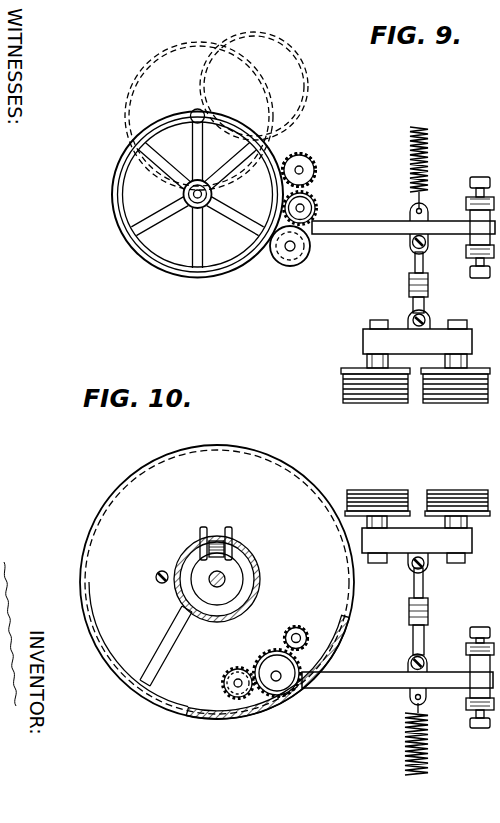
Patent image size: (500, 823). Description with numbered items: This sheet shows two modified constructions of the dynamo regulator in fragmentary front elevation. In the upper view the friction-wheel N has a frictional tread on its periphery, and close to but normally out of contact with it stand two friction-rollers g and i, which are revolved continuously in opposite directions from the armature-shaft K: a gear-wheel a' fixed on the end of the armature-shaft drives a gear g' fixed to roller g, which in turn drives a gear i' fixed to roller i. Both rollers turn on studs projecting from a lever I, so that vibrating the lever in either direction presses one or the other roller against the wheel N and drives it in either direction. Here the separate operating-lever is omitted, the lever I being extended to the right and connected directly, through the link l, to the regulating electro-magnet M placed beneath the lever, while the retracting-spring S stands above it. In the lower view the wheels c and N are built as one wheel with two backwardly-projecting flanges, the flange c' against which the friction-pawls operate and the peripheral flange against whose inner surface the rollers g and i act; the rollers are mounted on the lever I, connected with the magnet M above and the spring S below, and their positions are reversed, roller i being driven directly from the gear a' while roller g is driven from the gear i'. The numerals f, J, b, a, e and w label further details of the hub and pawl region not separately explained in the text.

In FIG. 9, the friction-wheel N is at (157, 279).
In FIG. 10, the friction-wheel N is at (52, 546).
In FIG. 9, the pendulum arm circle f is at (152, 79).
In FIG. 9, the wheel c is at (259, 86).
In FIG. 9, the armature-shaft K is at (352, 169).
In FIG. 10, the armature-shaft K is at (290, 633).
In FIG. 9, the gear-wheel a' is at (314, 172).
In FIG. 10, the gear-wheel a' is at (309, 637).
In FIG. 9, the friction-roller g is at (314, 208).
In FIG. 10, the friction-roller g is at (226, 683).
In FIG. 9, the gear g' is at (318, 204).
In FIG. 10, the gear g' is at (231, 671).
In FIG. 9, the friction-roller i is at (290, 254).
In FIG. 10, the friction-roller i is at (277, 673).
In FIG. 9, the gear i' is at (303, 247).
In FIG. 10, the gear i' is at (275, 664).
In FIG. 9, the lever I is at (380, 226).
In FIG. 10, the lever I is at (397, 679).
In FIG. 9, the retracting-spring S is at (409, 168).
In FIG. 10, the retracting-spring S is at (409, 739).
In FIG. 9, the link l is at (423, 290).
In FIG. 10, the link l is at (423, 611).
In FIG. 9, the regulating electro-magnet M is at (406, 361).
In FIG. 10, the regulating electro-magnet M is at (421, 531).
In FIG. 10, the flange c' is at (232, 579).
In FIG. 10, the hub bearing J is at (217, 579).
In FIG. 10, the shaft b is at (209, 580).
In FIG. 10, the post a is at (194, 540).
In FIG. 10, the post e is at (232, 532).
In FIG. 10, the screw w is at (152, 579).